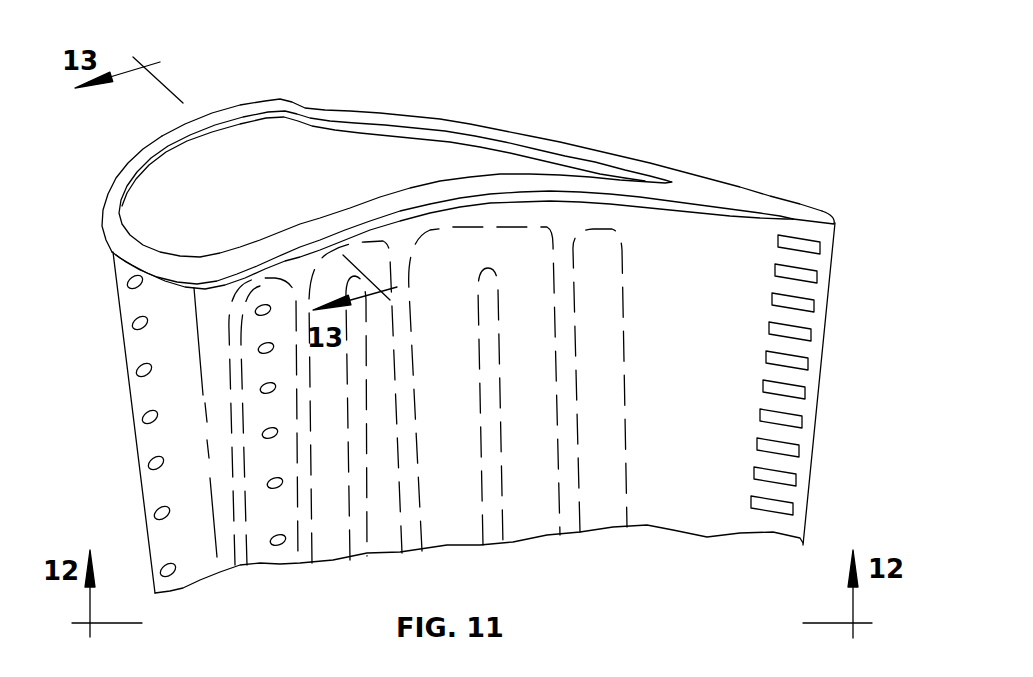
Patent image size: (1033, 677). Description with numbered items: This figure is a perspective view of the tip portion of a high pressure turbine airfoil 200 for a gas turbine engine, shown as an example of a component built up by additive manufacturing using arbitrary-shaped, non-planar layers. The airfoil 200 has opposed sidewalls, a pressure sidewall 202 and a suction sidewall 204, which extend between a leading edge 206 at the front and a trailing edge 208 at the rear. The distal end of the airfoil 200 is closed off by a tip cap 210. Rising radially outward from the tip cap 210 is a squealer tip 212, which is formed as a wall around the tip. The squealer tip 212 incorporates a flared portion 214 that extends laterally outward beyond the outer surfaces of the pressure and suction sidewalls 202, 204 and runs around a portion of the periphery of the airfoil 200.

The airfoil 200 is at (497, 72).
The pressure sidewall 202 is at (670, 512).
The suction sidewall 204 is at (730, 192).
The leading edge 206 is at (216, 553).
The trailing edge 208 is at (826, 347).
The tip cap 210 is at (263, 191).
The squealer tip 212 is at (341, 98).
The flared portion 214 is at (153, 139).